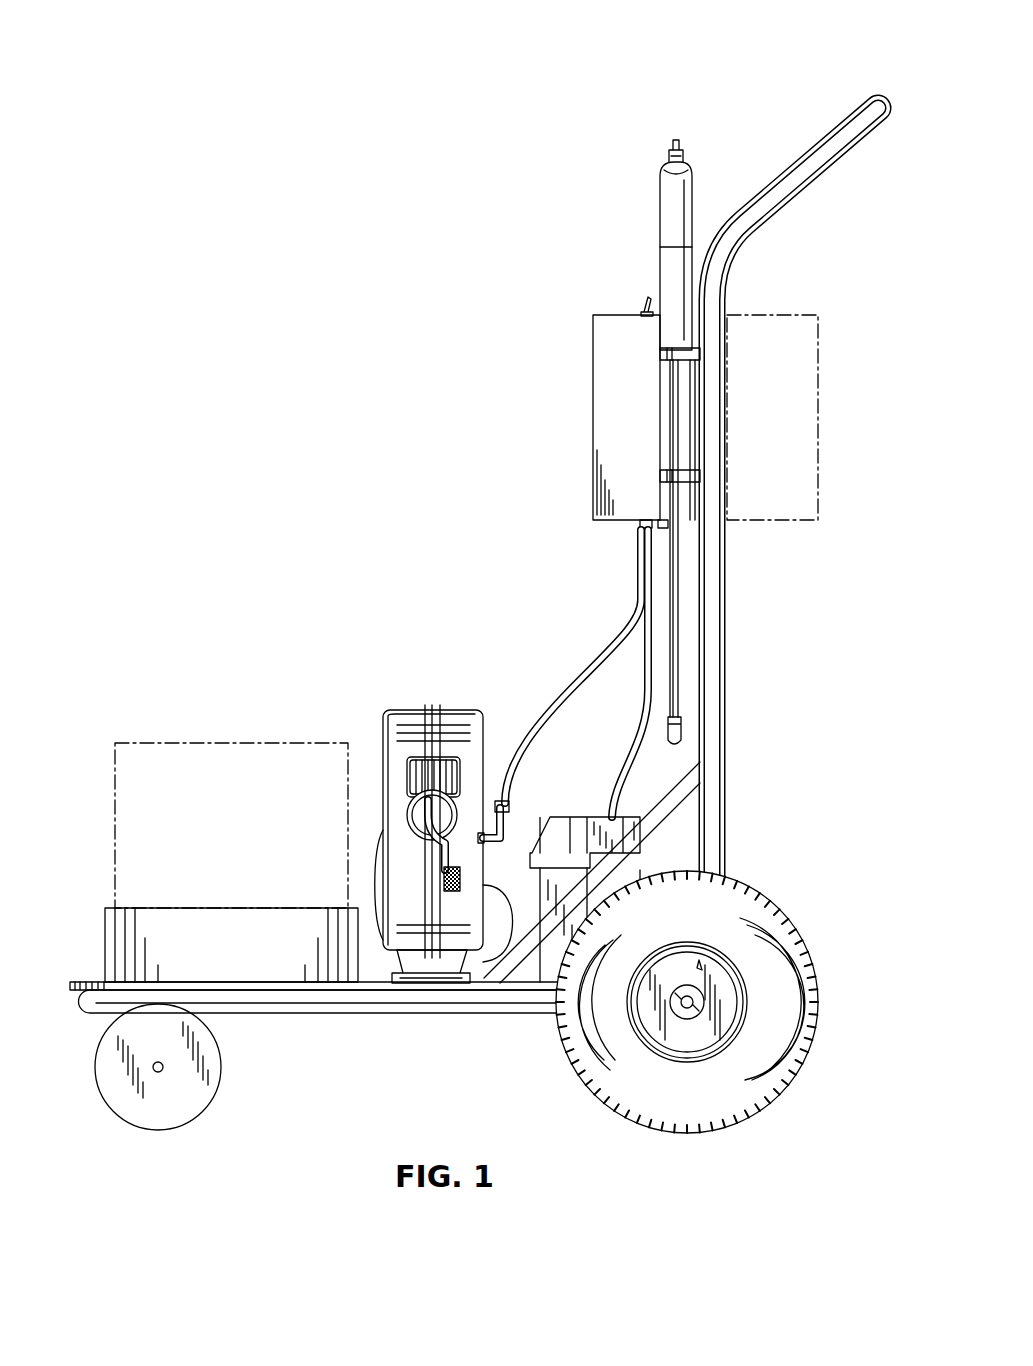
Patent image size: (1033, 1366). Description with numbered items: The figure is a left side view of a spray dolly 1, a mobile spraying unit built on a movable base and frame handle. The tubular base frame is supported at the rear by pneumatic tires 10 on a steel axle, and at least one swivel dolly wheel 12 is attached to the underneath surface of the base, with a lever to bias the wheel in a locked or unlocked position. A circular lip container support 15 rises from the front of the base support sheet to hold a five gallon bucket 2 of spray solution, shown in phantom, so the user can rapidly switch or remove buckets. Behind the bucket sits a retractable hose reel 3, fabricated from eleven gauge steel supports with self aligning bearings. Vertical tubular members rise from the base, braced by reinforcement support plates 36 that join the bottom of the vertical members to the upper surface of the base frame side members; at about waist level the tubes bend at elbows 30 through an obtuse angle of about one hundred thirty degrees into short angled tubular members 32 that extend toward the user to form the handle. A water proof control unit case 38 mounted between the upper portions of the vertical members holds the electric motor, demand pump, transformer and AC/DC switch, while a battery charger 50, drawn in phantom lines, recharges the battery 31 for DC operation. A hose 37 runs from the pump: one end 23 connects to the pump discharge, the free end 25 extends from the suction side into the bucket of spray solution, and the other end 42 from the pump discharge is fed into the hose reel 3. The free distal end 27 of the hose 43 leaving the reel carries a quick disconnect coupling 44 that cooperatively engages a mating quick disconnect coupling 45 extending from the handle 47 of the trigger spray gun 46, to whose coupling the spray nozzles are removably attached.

The spray dolly 1 is at (479, 629).
The bucket 2 is at (130, 788).
The retractable hose reel 3 is at (371, 801).
The pneumatic tires 10 is at (731, 1108).
The swivel dolly wheel 12 is at (110, 1098).
The circular lip container support 15 is at (108, 952).
The hose end 23 is at (641, 546).
The free end of hose 25 is at (493, 985).
The free distal end of hose 27 is at (443, 850).
The elbows 30 is at (795, 466).
The battery 31 is at (580, 837).
The angled tubular members 32 is at (804, 160).
The reinforcement support plates 36 is at (696, 818).
The hose 37 is at (600, 642).
The water proof control unit case 38 is at (593, 347).
The other end of hose 42 is at (527, 740).
The hose 43 is at (418, 818).
The quick disconnect coupling 44 is at (515, 850).
The mating quick disconnect coupling 45 is at (655, 150).
The trigger spray gun 46 is at (656, 409).
The handle 47 is at (650, 183).
The battery charger 50 is at (805, 365).